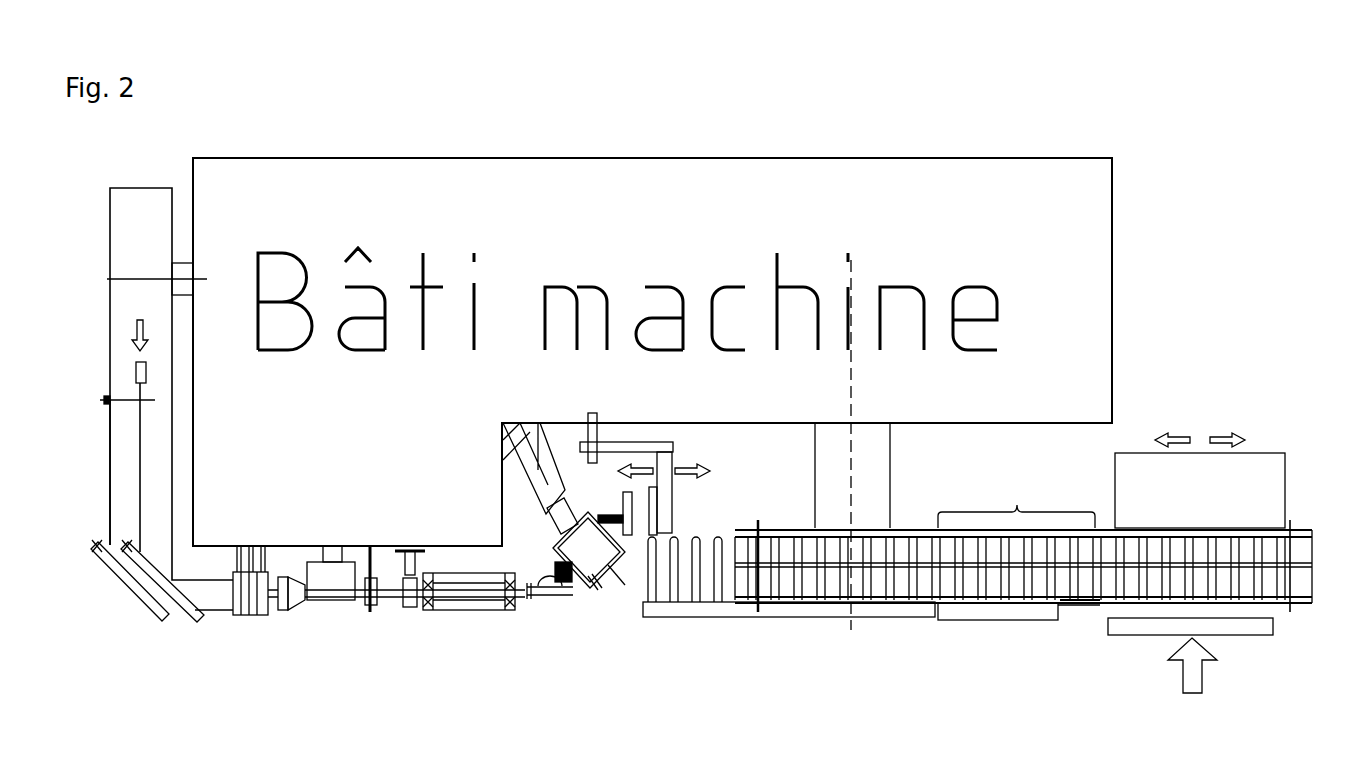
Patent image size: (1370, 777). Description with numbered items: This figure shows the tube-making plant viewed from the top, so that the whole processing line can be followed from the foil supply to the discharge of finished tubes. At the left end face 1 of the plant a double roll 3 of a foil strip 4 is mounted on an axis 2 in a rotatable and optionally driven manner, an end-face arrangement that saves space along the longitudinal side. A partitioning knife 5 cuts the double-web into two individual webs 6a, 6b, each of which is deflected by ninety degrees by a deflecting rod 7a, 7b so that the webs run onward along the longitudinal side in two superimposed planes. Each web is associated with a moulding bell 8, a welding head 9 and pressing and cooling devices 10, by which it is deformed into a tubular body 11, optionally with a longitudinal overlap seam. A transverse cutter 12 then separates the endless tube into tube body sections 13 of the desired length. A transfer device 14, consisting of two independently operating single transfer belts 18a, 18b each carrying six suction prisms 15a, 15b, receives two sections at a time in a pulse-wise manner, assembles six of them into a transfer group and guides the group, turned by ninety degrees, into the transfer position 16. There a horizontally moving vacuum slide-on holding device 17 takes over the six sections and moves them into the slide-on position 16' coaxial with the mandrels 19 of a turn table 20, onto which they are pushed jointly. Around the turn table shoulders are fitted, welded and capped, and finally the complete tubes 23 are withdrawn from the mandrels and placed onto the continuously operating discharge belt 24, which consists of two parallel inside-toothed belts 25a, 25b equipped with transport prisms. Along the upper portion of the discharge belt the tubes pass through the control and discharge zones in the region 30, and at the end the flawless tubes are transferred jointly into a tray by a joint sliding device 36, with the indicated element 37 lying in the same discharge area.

The left end face 1 is at (193, 180).
The axis 2 is at (186, 272).
The double roll 3 is at (138, 197).
The foil strip 4 is at (120, 328).
The partitioning knife 5 is at (136, 372).
The individual web 6a is at (155, 465).
The individual web 6b is at (118, 508).
The deflecting rod 7a is at (185, 622).
The deflecting rod 7b is at (150, 622).
The moulding bell 8 is at (285, 620).
The welding head 9 is at (325, 600).
The pressing and cooling devices 10 is at (365, 612).
The tubular body 11 is at (390, 600).
The transverse cutter 12 is at (415, 607).
The tube body section 13 is at (470, 610).
The transfer device 14 is at (610, 596).
The suction prism 15a is at (543, 605).
The suction prism 15b is at (568, 598).
The transfer position 16 is at (608, 509).
The slide-on position 16' is at (673, 499).
The slide-on holding device 17 is at (665, 520).
The single transfer belt 18a is at (580, 604).
The single transfer belt 18b is at (592, 598).
The mandrel 19 is at (705, 590).
The turn table 20 is at (820, 605).
The tube 23 is at (1082, 606).
The discharge belt 24 is at (1068, 618).
The toothed belt 25a is at (1302, 585).
The toothed belt 25b is at (1305, 553).
The region 30 is at (1016, 548).
The joint sliding device 36 is at (1245, 628).
The ejection device 37 is at (1270, 468).